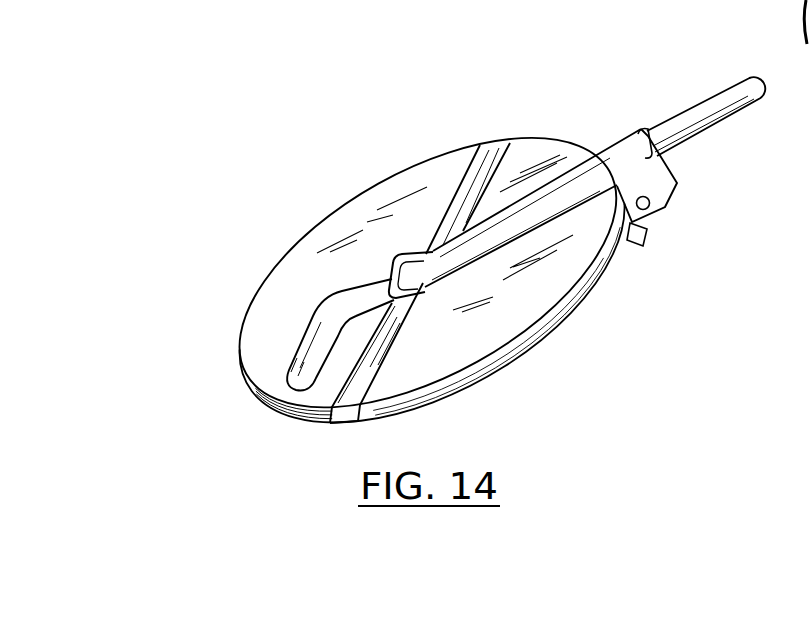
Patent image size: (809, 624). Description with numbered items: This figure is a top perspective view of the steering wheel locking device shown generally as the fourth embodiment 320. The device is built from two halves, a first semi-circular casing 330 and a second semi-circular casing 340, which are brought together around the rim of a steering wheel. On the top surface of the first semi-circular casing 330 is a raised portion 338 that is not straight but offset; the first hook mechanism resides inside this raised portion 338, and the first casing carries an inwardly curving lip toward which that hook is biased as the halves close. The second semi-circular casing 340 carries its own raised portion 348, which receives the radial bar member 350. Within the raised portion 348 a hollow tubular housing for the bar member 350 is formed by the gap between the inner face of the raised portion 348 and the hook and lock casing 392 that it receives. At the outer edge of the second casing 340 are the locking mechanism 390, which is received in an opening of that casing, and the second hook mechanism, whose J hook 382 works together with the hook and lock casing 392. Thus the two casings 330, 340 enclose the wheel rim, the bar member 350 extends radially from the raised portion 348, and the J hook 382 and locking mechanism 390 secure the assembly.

The fourth embodiment 320 is at (378, 152).
The first semi-circular casing 330 is at (290, 283).
The raised portion 338 is at (310, 350).
The second semi-circular casing 340 is at (527, 302).
The raised portion 348 is at (612, 160).
The bar member 350 is at (717, 100).
The J hook 382 is at (638, 246).
The locking mechanism 390 is at (660, 216).
The hook and lock casing 392 is at (677, 189).